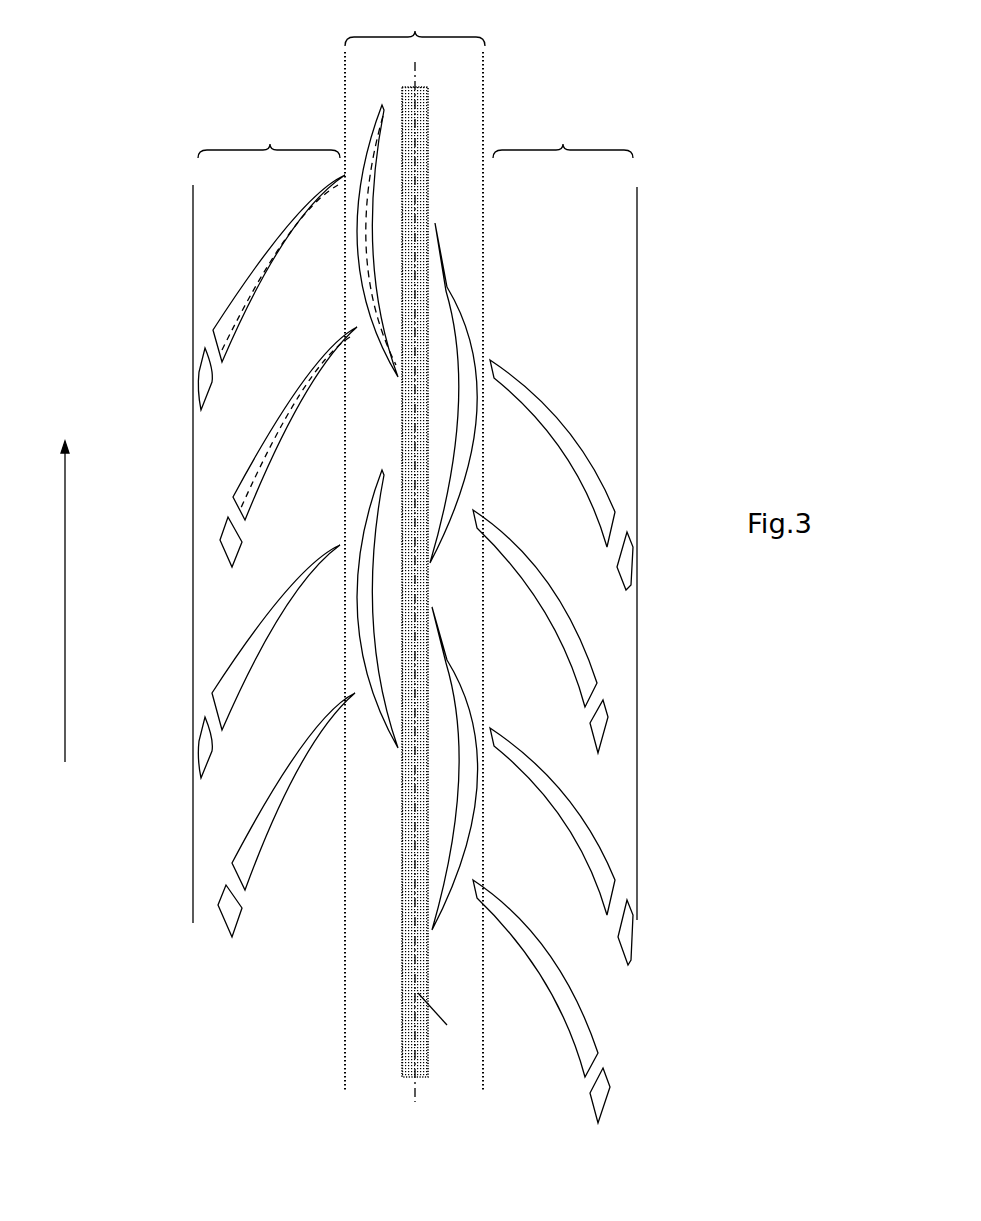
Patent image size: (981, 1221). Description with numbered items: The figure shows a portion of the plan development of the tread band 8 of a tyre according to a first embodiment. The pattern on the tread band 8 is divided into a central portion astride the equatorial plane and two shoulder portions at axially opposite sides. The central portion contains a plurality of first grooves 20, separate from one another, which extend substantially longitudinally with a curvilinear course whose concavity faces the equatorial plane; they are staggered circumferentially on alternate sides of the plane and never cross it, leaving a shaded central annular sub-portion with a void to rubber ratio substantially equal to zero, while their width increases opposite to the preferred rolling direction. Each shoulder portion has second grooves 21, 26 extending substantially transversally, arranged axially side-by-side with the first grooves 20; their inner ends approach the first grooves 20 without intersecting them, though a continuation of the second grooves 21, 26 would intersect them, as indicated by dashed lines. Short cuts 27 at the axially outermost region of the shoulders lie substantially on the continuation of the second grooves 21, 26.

The tread band 8 is at (577, 95).
The first grooves 20 is at (377, 285).
The second grooves 21 is at (253, 265).
The second grooves 26 is at (545, 415).
The short cuts 27 is at (205, 373).